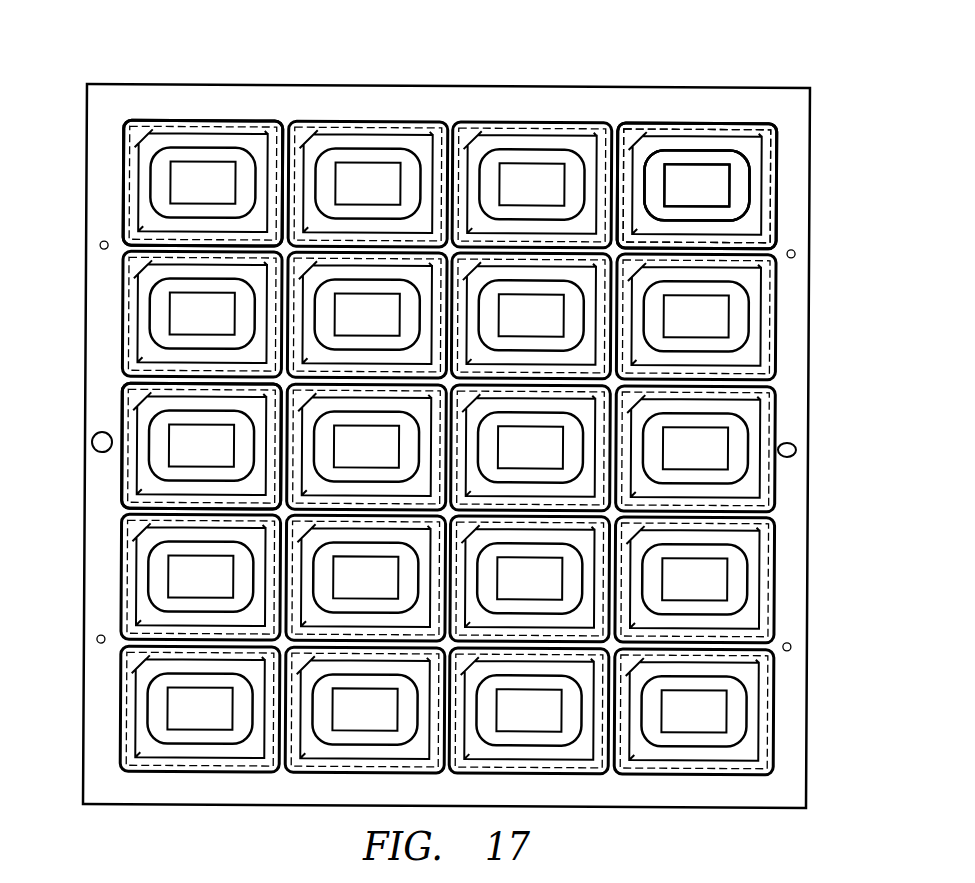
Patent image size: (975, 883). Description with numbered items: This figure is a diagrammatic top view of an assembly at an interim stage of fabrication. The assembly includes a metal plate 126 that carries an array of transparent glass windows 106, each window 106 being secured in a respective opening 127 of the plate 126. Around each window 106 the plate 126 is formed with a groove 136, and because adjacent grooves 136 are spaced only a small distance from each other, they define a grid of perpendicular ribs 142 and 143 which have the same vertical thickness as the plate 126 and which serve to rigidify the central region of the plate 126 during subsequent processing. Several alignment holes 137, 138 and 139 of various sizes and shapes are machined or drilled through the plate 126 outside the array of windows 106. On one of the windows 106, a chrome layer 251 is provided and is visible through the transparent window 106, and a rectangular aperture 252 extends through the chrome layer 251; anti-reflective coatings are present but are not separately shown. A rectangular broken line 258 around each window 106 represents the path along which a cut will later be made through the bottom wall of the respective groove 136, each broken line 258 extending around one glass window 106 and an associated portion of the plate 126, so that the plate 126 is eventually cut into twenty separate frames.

The window 106 is at (712, 182).
The plate 126 is at (459, 86).
The opening 127 is at (650, 149).
The groove 136 is at (752, 122).
The alignment hole 137 is at (92, 446).
The alignment hole 138 is at (99, 247).
The alignment hole 139 is at (796, 448).
The rib 142 is at (280, 122).
The rib 143 is at (133, 382).
The chrome layer 251 is at (752, 190).
The rectangular aperture 252 is at (712, 205).
The rectangular broken line 258 is at (697, 128).